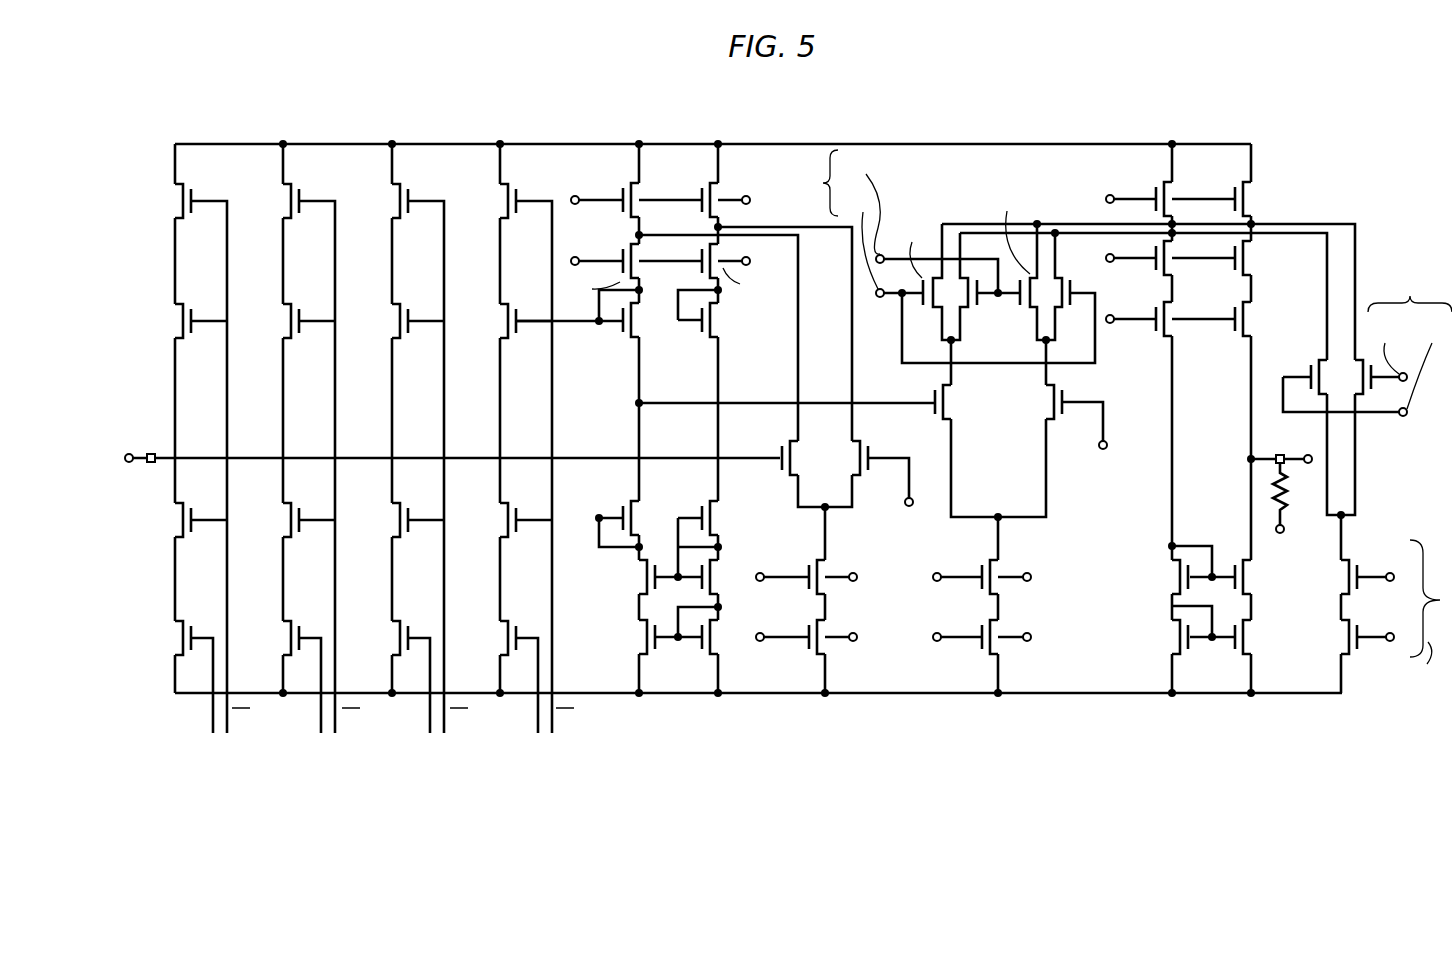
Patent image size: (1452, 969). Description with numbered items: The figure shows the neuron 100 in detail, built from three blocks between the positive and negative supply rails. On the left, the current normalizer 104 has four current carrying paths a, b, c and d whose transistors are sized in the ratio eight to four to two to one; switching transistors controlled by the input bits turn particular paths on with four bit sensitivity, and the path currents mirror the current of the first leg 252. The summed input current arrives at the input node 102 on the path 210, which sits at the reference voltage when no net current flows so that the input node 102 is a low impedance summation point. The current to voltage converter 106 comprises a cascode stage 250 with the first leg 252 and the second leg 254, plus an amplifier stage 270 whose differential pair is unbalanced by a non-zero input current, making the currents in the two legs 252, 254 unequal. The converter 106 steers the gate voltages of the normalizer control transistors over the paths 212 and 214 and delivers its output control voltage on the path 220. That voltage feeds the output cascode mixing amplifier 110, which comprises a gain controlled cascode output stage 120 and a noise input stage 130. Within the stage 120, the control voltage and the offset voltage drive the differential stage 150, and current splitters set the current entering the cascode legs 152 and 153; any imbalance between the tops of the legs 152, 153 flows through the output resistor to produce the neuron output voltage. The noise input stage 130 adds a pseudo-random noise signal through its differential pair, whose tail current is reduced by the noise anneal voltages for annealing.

The neuron 100 is at (553, 808).
The input node 102 is at (128, 455).
The current normalizer 104 is at (640, 767).
The current to voltage converter 106 is at (950, 767).
The output cascode mixing amplifier 110 is at (1400, 718).
The gain controlled cascode output stage 120 is at (1268, 767).
The noise input stage 130 is at (1400, 767).
The differential stage 150 is at (1056, 495).
The cascode leg 152 is at (1171, 140).
The cascode leg 153 is at (1262, 142).
The path 210 is at (151, 452).
The path 212 is at (570, 522).
The path 214 is at (570, 325).
The path 220 is at (880, 400).
The cascode stage 250 is at (618, 110).
The first leg 252 is at (636, 138).
The second leg 254 is at (714, 138).
The amplifier stage 270 is at (813, 133).